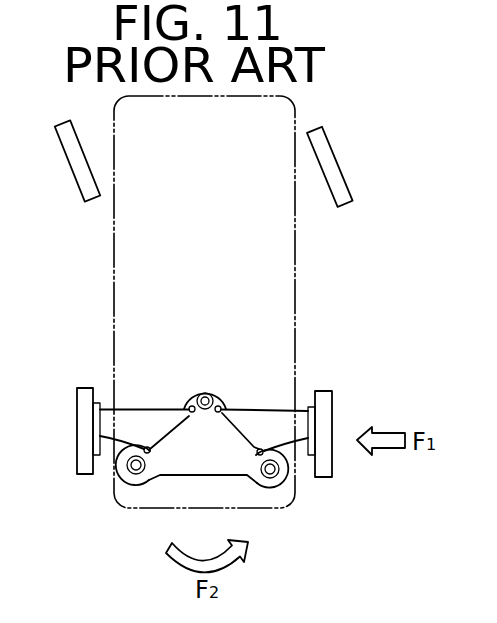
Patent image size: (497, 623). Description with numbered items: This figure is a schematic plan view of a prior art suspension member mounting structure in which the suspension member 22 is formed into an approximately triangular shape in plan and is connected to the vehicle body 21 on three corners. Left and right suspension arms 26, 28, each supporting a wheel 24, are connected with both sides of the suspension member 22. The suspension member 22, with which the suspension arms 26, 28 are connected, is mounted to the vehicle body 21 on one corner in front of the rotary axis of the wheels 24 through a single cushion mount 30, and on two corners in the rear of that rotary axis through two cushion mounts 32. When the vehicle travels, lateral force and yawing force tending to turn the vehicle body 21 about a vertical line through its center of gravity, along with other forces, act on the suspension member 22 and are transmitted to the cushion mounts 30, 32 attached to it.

The vehicle body 21 is at (295, 323).
The suspension member 22 is at (173, 440).
The wheel 24 is at (77, 443).
The left suspension arm 26 is at (125, 404).
The right suspension arm 28 is at (273, 402).
The cushion mount 30 is at (205, 393).
The cushion mounts 32 is at (132, 468).